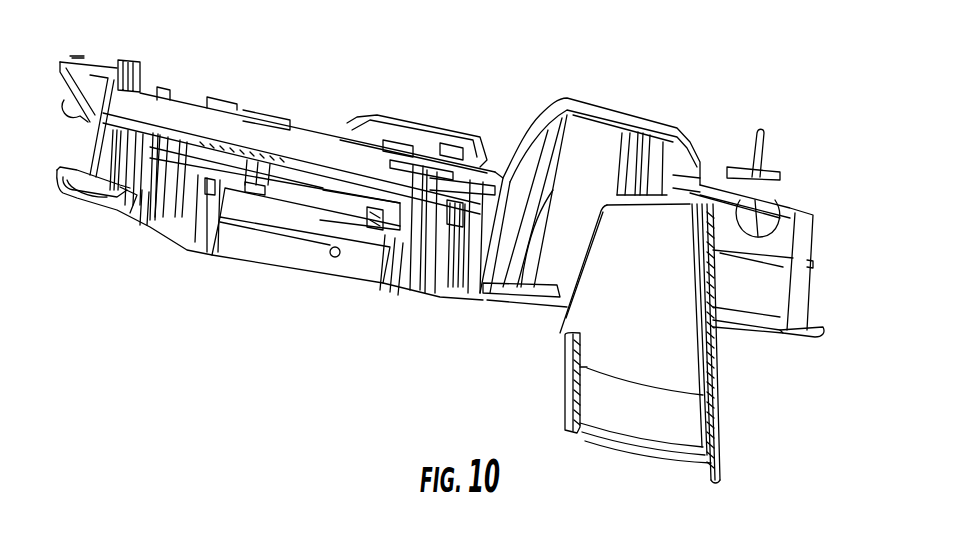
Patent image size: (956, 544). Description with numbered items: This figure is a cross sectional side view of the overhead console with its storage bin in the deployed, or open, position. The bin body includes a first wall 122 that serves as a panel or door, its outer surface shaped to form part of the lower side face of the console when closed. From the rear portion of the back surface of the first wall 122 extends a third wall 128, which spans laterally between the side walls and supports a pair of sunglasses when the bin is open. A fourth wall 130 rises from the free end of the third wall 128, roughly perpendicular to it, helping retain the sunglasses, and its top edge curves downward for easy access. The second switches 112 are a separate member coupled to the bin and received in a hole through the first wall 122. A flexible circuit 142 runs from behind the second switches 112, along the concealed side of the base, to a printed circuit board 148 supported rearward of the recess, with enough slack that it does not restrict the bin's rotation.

The printed circuit board 148 is at (437, 127).
The flexible circuit 142 is at (780, 217).
The second switches 112 is at (713, 273).
The first wall 122 is at (722, 384).
The fourth wall 130 is at (568, 410).
The third wall 128 is at (617, 437).